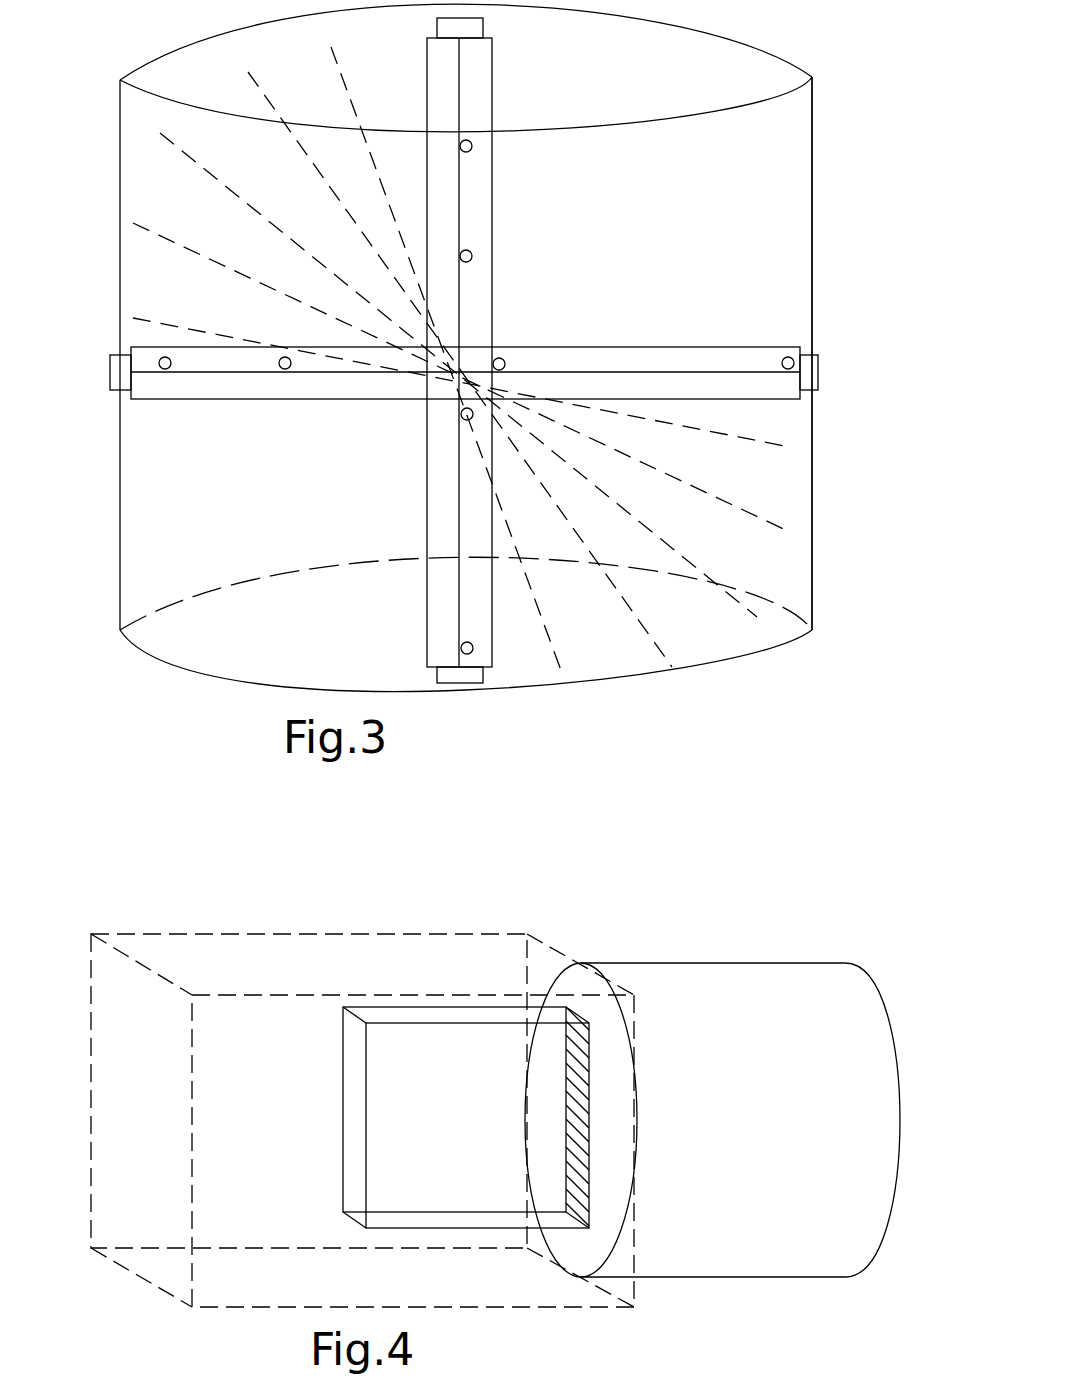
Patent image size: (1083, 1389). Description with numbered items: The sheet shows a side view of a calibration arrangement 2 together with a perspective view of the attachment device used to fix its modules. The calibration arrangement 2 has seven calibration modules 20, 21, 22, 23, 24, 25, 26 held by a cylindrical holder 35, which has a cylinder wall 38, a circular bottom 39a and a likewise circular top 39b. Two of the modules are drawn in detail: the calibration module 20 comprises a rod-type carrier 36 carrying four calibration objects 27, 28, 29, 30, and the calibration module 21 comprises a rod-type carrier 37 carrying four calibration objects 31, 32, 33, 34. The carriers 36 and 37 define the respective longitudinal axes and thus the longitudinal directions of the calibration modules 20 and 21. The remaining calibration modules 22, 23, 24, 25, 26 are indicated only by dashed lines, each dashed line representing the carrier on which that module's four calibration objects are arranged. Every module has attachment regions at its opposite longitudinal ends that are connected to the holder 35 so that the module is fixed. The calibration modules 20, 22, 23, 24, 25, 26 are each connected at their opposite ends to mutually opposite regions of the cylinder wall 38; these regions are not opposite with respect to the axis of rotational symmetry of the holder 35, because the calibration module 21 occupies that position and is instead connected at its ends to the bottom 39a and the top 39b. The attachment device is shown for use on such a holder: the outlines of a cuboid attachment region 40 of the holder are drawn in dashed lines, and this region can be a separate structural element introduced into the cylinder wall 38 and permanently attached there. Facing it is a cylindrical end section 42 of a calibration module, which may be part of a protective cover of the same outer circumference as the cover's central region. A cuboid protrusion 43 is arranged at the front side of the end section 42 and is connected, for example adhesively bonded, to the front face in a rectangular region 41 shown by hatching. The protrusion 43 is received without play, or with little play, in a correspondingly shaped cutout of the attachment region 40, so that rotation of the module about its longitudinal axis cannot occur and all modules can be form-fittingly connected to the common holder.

In FIG. 3, the calibration arrangement 2 is at (110, 538).
In FIG. 3, the calibration module 20 is at (772, 347).
In FIG. 3, the calibration module 21 is at (492, 195).
In FIG. 3, the calibration module 22 is at (157, 321).
In FIG. 3, the calibration module 23 is at (183, 247).
In FIG. 3, the calibration module 24 is at (213, 176).
In FIG. 3, the calibration module 25 is at (273, 107).
In FIG. 3, the calibration module 26 is at (352, 103).
In FIG. 3, the calibration object 27 is at (167, 370).
In FIG. 3, the calibration object 28 is at (285, 370).
In FIG. 3, the calibration object 29 is at (503, 359).
In FIG. 3, the calibration object 30 is at (820, 355).
In FIG. 3, the calibration object 31 is at (472, 143).
In FIG. 3, the calibration object 32 is at (472, 256).
In FIG. 3, the calibration object 33 is at (462, 417).
In FIG. 3, the calibration object 34 is at (472, 654).
In FIG. 3, the holder 35 is at (812, 143).
In FIG. 3, the rod-type carrier 36 is at (645, 365).
In FIG. 3, the rod-type carrier 37 is at (453, 590).
In FIG. 3, the cylinder wall 38 is at (812, 580).
In FIG. 3, the bottom 39a is at (220, 645).
In FIG. 3, the top 39b is at (213, 58).
In FIG. 4, the attachment region 40 is at (487, 953).
In FIG. 4, the rectangular region 41 is at (575, 1146).
In FIG. 4, the end section 42 is at (818, 985).
In FIG. 4, the protrusion 43 is at (509, 1046).